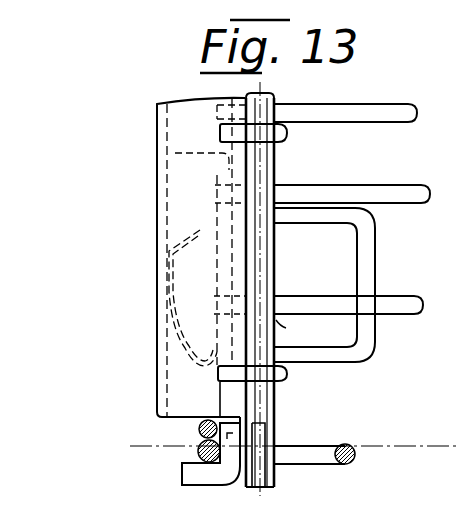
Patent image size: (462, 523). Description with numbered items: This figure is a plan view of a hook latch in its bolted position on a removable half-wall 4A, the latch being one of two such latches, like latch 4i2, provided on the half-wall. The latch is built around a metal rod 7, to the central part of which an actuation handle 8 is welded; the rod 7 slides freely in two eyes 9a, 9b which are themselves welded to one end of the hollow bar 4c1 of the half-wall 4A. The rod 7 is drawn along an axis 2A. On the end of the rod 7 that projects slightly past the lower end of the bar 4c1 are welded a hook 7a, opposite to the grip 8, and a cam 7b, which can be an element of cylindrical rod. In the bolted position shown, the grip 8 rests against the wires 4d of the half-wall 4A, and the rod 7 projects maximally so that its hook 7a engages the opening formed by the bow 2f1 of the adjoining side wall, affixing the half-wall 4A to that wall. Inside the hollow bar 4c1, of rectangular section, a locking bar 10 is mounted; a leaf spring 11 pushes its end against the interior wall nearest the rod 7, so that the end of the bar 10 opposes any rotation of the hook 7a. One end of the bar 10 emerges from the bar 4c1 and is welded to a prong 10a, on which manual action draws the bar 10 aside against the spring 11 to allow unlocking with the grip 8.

The removable half-wall 4A is at (157, 312).
The bar 4c1 is at (180, 192).
The leaf spring 11 is at (183, 340).
The metal rod 7 is at (270, 256).
The wires 4d is at (401, 190).
The actuation handle 8 is at (370, 261).
The latch 4i2 is at (277, 325).
The eye 9a is at (287, 134).
The eye 9b is at (287, 376).
The axis 2A is at (418, 446).
The hook 7a is at (190, 477).
The prong 10a is at (199, 428).
The locking bar 10 is at (224, 403).
The cam 7b is at (277, 474).
The bow 2f1 is at (320, 446).